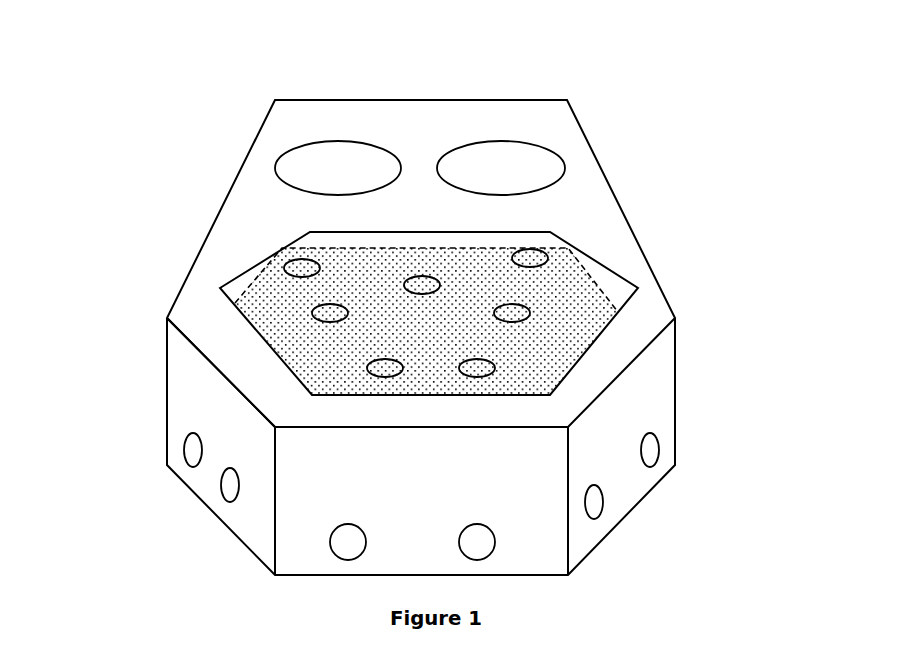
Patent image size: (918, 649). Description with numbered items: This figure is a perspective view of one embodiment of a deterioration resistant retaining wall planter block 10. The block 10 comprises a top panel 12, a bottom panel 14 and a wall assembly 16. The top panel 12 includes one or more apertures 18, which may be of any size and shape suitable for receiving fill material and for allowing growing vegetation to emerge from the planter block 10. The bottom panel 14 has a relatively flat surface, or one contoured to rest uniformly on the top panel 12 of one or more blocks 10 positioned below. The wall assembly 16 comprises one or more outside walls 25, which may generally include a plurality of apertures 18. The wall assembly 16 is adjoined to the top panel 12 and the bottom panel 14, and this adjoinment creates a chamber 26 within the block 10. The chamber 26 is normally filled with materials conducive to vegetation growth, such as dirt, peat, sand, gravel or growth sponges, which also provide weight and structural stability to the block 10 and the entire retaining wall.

The deterioration resistant retaining wall planter block 10 is at (175, 168).
The top panel 12 is at (593, 213).
The bottom panel 14 is at (640, 507).
The wall assembly 16 is at (166, 307).
The apertures 18 is at (355, 157).
The outside walls 25 is at (242, 163).
The chamber 26 is at (477, 267).